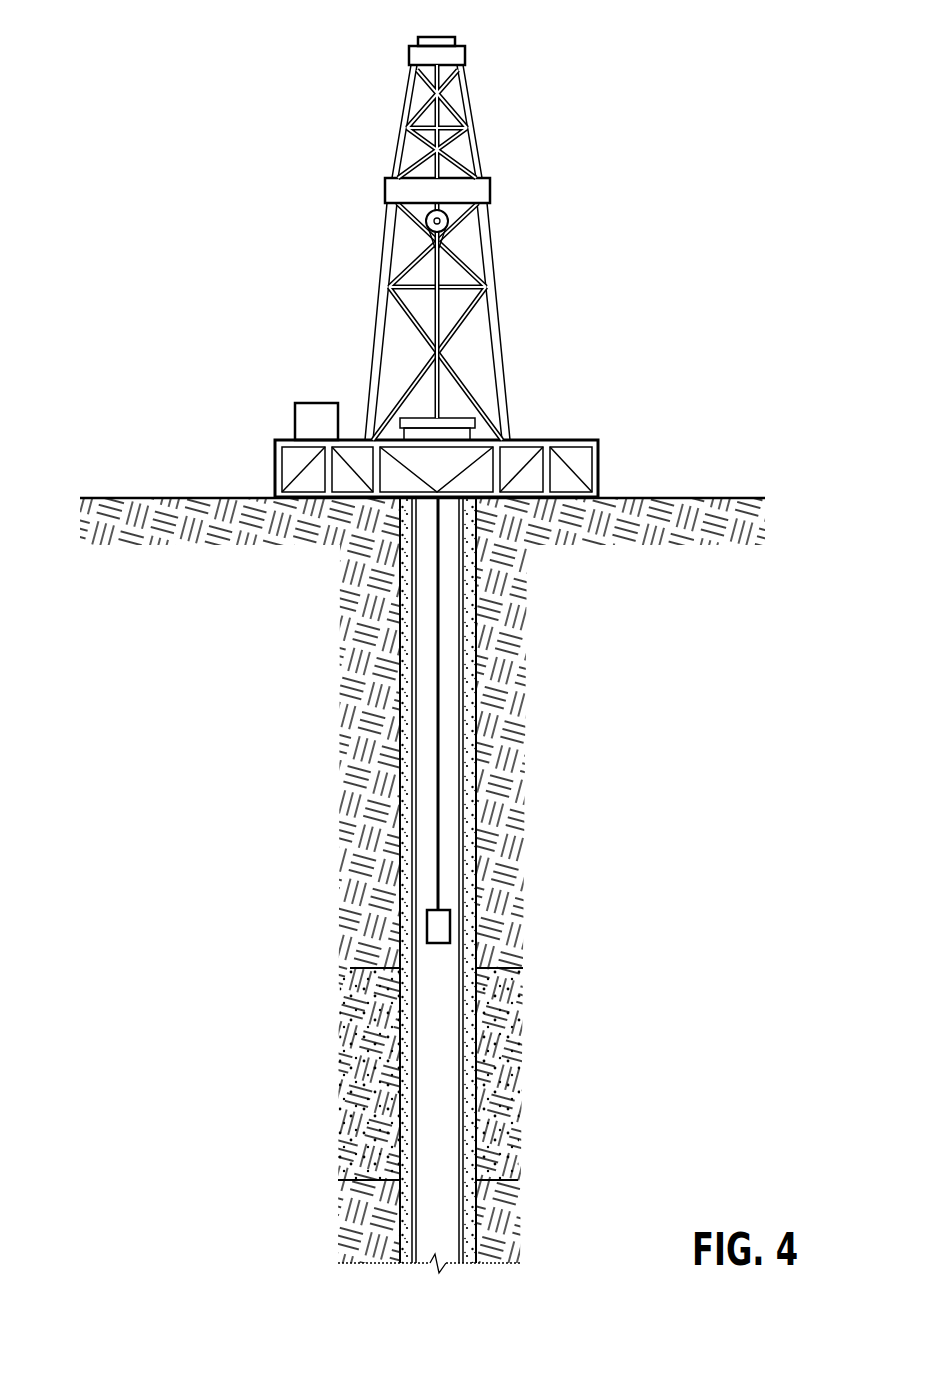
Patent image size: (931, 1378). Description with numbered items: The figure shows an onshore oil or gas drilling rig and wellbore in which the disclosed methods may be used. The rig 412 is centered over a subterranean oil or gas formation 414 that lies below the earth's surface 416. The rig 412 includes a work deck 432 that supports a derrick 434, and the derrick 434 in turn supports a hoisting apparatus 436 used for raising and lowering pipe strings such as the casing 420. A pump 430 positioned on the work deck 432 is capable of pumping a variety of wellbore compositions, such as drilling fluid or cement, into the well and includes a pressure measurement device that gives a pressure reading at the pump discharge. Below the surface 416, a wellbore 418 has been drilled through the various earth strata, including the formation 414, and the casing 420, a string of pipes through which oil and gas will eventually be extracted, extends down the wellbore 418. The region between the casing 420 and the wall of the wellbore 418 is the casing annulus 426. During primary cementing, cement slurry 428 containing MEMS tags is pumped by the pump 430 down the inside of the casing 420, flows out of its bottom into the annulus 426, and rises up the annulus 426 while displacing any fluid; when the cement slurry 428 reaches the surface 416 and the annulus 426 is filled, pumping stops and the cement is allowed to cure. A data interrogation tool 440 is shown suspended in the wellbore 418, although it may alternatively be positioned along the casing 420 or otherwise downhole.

The rig 412 is at (566, 440).
The subterranean oil or gas formation 414 is at (522, 1093).
The earth's surface 416 is at (667, 498).
The wellbore 418 is at (493, 649).
The casing 420 is at (482, 814).
The casing annulus 426 is at (482, 940).
The cement slurry 428 is at (404, 882).
The pump 430 is at (294, 416).
The work deck 432 is at (276, 466).
The derrick 434 is at (474, 108).
The hoisting apparatus 436 is at (448, 223).
The data interrogation tool 440 is at (451, 921).